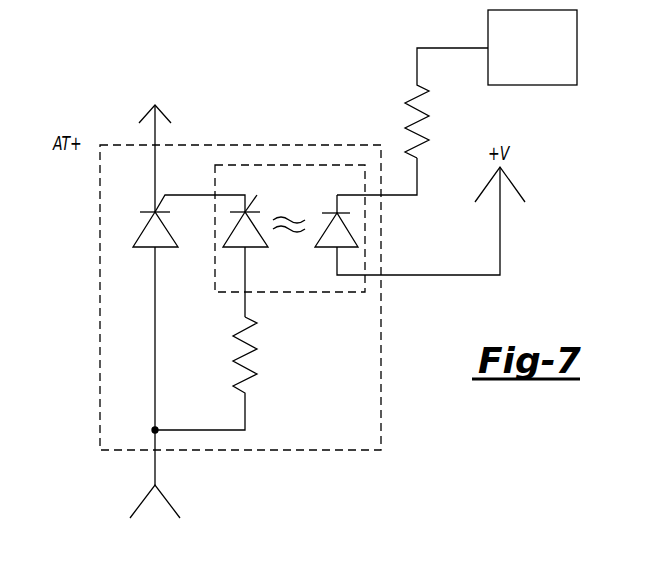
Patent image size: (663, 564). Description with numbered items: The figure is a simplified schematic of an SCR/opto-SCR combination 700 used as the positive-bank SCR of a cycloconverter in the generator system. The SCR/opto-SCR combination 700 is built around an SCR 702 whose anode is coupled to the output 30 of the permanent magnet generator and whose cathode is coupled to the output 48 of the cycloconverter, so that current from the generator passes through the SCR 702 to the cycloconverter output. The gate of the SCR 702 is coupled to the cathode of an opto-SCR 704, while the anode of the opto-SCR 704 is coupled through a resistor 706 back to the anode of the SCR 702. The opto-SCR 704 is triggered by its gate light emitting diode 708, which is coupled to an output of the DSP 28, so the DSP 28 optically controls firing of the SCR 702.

The SCR/opto-SCR combination 700 is at (315, 450).
The SCR 702 is at (143, 230).
The opto-SCR 704 is at (302, 292).
The resistor 706 is at (250, 357).
The gate light emitting diode 708 is at (345, 230).
The output of cycloconverter 48 is at (155, 144).
The output of permanent magnet generator 30 is at (155, 399).
The DSP 28 is at (532, 85).